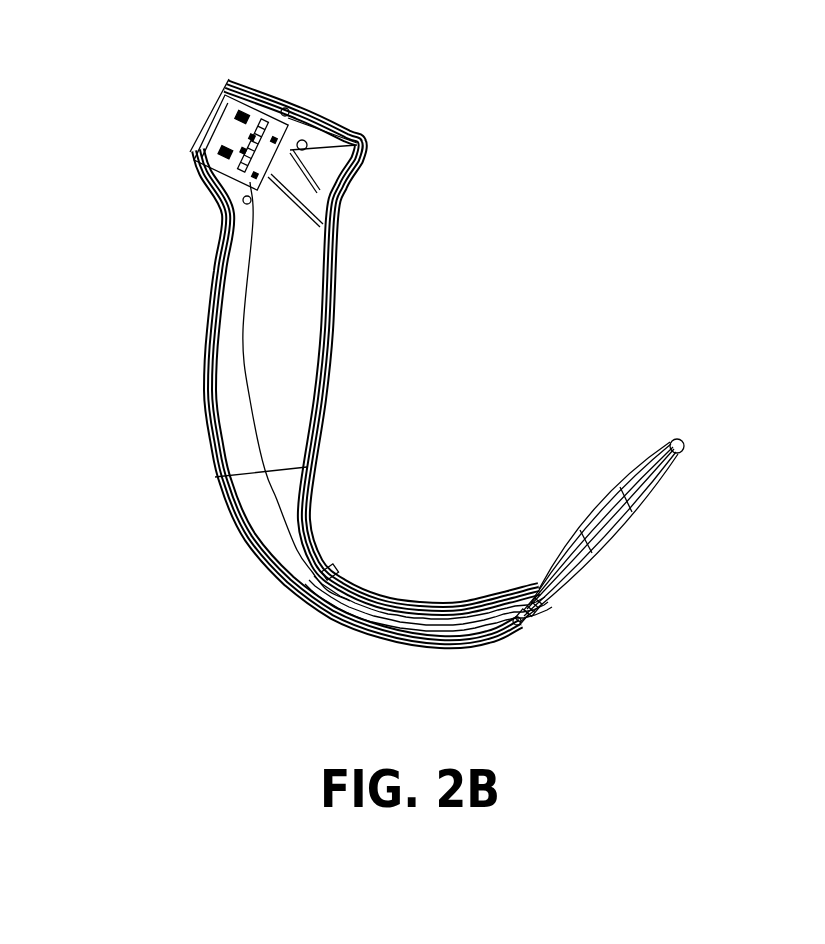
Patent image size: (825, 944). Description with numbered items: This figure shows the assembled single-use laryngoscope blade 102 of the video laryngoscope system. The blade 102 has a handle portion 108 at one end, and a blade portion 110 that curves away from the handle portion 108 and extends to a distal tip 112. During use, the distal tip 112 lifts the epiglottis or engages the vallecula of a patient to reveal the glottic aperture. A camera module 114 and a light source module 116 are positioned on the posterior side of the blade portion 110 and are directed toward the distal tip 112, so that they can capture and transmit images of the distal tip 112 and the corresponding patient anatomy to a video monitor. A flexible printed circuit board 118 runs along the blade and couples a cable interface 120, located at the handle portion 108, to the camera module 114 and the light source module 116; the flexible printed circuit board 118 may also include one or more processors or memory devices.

The laryngoscope blade 102 is at (432, 391).
The handle portion 108 is at (335, 302).
The blade portion 110 is at (578, 526).
The distal tip 112 is at (683, 441).
The camera module 114 is at (520, 624).
The light source module 116 is at (542, 612).
The flexible printed circuit board 118 is at (267, 475).
The cable interface 120 is at (238, 130).